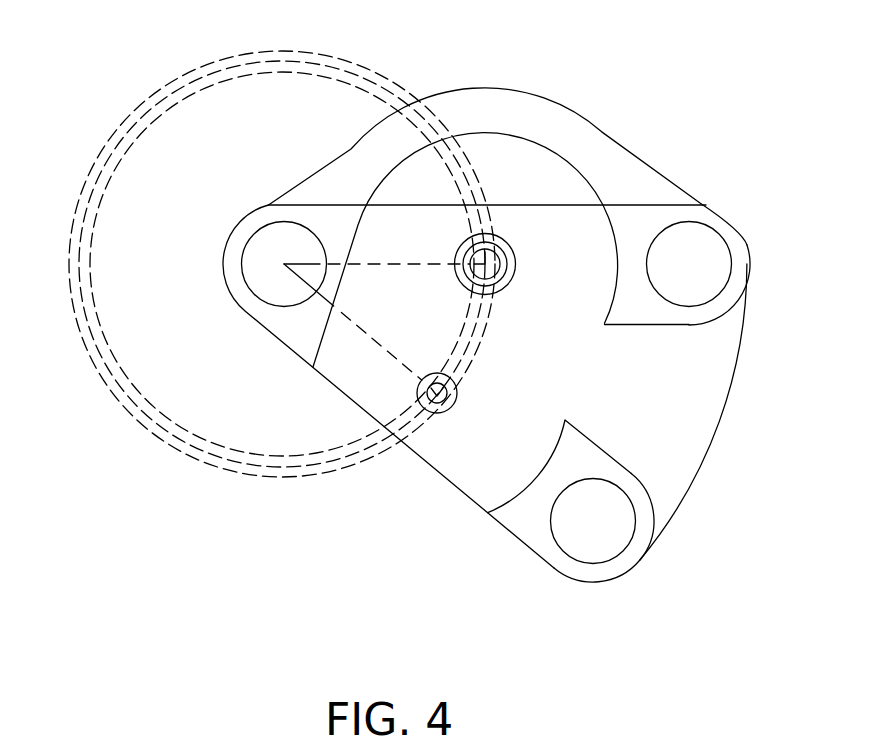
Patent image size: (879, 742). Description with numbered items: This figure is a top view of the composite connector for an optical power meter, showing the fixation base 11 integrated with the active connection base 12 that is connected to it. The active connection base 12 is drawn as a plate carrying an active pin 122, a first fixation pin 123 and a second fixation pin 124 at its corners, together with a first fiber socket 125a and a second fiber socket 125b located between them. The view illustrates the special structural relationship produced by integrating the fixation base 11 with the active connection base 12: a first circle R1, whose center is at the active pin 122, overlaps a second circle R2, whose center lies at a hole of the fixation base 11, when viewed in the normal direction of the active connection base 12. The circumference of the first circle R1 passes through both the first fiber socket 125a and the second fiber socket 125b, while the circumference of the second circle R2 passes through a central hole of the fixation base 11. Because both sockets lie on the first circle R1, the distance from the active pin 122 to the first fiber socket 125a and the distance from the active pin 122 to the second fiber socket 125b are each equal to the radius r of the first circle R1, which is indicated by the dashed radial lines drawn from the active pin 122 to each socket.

The fixation base 11 is at (533, 107).
The active connection base 12 is at (705, 385).
The active pin 122 is at (263, 242).
The first fixation pin 123 is at (702, 258).
The second fixation pin 124 is at (608, 532).
The first fiber socket 125a is at (508, 253).
The second fiber socket 125b is at (440, 420).
The radius r is at (377, 308).
The first circle R1 is at (308, 63).
The second circle R2 is at (205, 65).